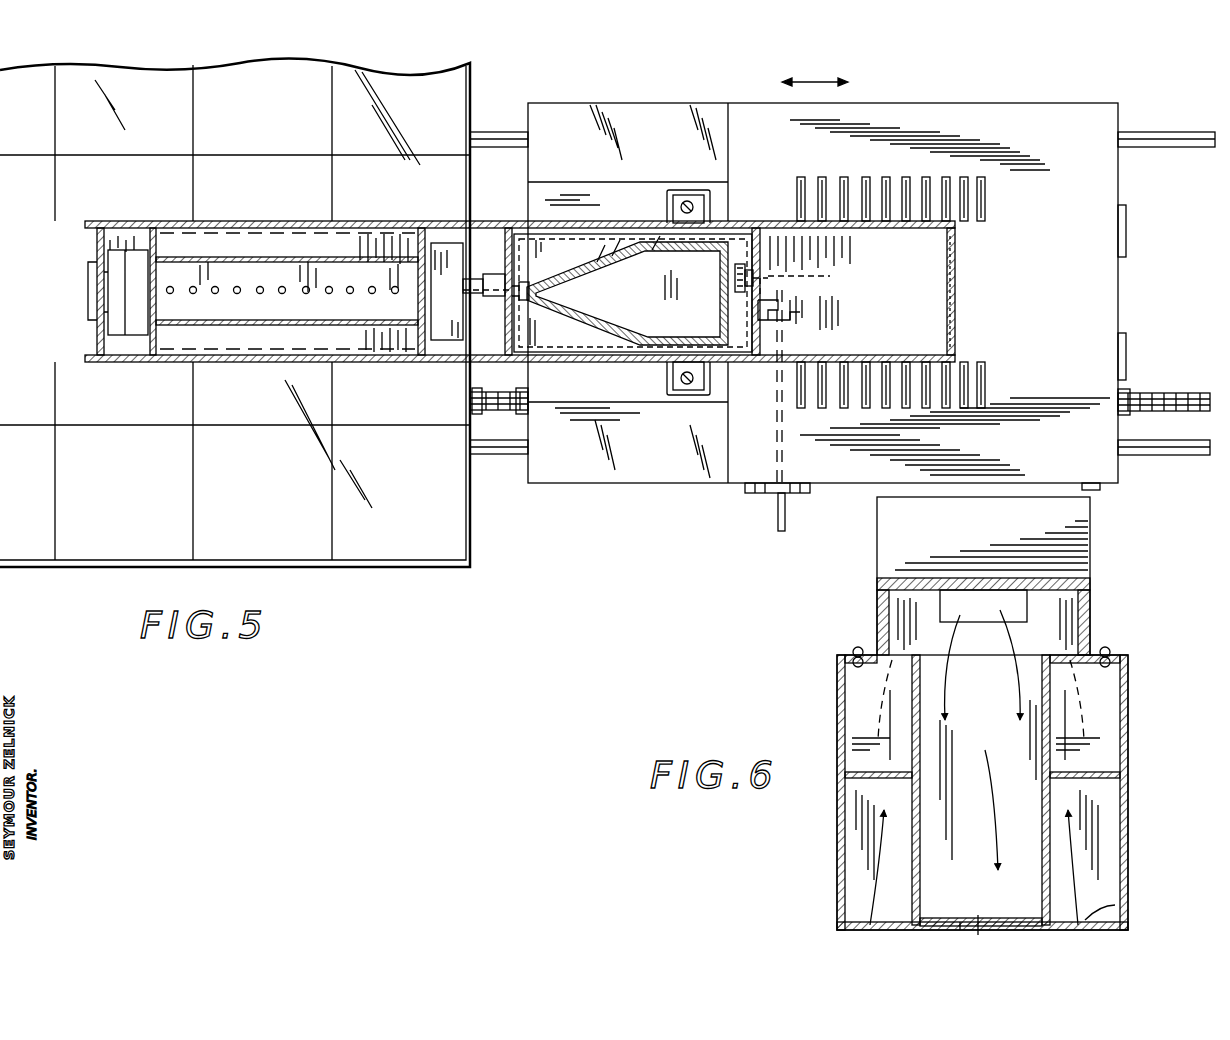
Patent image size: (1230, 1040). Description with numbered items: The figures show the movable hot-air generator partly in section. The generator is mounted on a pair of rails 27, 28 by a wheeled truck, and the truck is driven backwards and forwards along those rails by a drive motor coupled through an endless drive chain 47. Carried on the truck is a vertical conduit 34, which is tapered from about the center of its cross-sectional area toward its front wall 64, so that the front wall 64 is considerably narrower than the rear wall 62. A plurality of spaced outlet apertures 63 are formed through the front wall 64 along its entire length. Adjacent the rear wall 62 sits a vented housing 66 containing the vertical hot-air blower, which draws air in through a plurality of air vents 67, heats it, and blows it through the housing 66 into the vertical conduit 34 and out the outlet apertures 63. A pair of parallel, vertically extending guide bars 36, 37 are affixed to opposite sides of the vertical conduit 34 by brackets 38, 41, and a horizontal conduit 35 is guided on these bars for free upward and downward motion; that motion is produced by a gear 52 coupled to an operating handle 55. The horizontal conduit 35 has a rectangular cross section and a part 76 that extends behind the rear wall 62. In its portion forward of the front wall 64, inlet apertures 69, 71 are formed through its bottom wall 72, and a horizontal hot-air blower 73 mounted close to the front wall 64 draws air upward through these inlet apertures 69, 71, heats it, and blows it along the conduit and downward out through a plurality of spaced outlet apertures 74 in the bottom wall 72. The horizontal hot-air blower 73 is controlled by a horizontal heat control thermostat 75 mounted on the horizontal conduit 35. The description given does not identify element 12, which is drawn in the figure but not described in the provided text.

In FIG. 5, the housing / cabinet 12 is at (422, 555).
In FIG. 5, the rail 27 is at (1180, 138).
In FIG. 5, the rail 28 is at (1176, 455).
In FIG. 5, the vertical conduit 34 is at (622, 330).
In FIG. 5, the horizontal conduit 35 is at (256, 207).
In FIG. 6, the horizontal conduit 35 is at (983, 711).
In FIG. 5, the guide bar 36 is at (687, 200).
In FIG. 5, the guide bar 37 is at (684, 386).
In FIG. 5, the bracket 38 is at (710, 397).
In FIG. 5, the bracket 41 is at (668, 192).
In FIG. 5, the drive chain 47 is at (1182, 382).
In FIG. 5, the gear 52 is at (796, 283).
In FIG. 5, the operating handle 55 is at (762, 500).
In FIG. 5, the rear wall 62 is at (788, 322).
In FIG. 5, the outlet apertures 63 is at (560, 286).
In FIG. 5, the front wall 64 is at (535, 300).
In FIG. 5, the vented housing 66 is at (1100, 308).
In FIG. 5, the air vents 67 is at (898, 185).
In FIG. 5, the inlet aperture 69 is at (170, 222).
In FIG. 6, the inlet aperture 69 is at (862, 920).
In FIG. 5, the inlet aperture 71 is at (230, 350).
In FIG. 6, the inlet aperture 71 is at (1120, 912).
In FIG. 6, the bottom wall 72 is at (955, 925).
In FIG. 5, the horizontal hot-air blower 73 is at (471, 291).
In FIG. 5, the outlet apertures 74 is at (282, 292).
In FIG. 6, the outlet apertures 74 is at (982, 925).
In FIG. 5, the horizontal heat control thermostat 75 is at (128, 262).
In FIG. 5, the part of horizontal conduit 76 is at (935, 268).